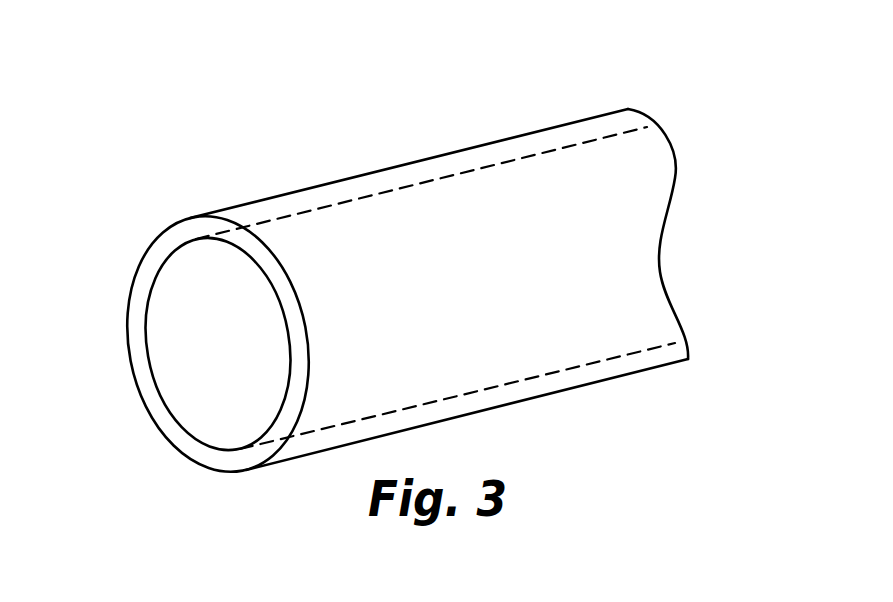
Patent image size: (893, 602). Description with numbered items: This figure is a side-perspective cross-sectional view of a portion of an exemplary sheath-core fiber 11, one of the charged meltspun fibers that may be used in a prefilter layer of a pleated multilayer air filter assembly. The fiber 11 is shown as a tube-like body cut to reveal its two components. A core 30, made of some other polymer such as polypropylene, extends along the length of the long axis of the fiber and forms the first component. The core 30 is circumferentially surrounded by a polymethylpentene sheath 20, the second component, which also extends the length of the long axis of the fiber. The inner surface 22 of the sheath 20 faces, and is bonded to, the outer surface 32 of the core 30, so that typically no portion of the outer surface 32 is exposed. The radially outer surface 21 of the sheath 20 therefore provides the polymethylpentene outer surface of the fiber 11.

The charged meltspun fiber 11 is at (172, 160).
The sheath 20 is at (177, 432).
The radially outer surface 21 is at (295, 191).
The inner surface 22 is at (506, 163).
The core 30 is at (182, 283).
The outer surface 32 is at (428, 180).